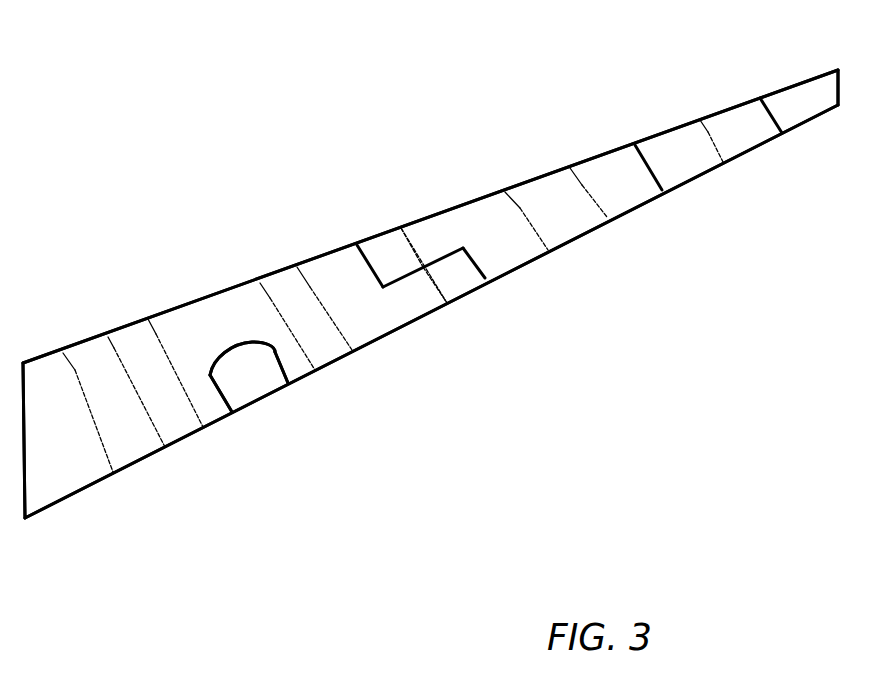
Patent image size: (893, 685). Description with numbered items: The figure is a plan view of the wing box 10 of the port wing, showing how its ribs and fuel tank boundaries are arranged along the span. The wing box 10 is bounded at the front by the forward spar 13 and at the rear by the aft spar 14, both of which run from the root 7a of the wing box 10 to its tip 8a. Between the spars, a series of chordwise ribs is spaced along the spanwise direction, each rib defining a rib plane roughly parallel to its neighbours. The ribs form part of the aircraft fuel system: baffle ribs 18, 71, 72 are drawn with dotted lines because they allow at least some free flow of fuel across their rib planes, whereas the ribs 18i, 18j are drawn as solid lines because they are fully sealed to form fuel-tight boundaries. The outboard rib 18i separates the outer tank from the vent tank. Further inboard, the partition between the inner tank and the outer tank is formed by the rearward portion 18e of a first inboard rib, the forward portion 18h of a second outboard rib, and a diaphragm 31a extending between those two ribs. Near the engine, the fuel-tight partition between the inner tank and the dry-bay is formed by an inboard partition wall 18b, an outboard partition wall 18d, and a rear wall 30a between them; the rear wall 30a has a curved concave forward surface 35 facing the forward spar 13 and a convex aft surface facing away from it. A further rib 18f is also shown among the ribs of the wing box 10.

The wing box 10 is at (248, 132).
The aft spar 14 is at (427, 217).
The forward spar 13 is at (598, 228).
The root 7a is at (23, 448).
The tip 8a is at (837, 90).
The baffle rib 18 is at (75, 370).
The partition wall 18b is at (223, 397).
The partition wall 18d is at (279, 370).
The rearward portion of first rib 18e is at (365, 258).
The web 18f is at (408, 323).
The forward portion of second rib 18h is at (478, 263).
The outboard rib 18i is at (643, 153).
The sealed rib 18j is at (768, 103).
The rear wall 30a is at (232, 340).
The diaphragm 31a is at (440, 258).
The curved concave forward surface 35 is at (246, 346).
The baffle rib 71 is at (437, 288).
The baffle rib 72 is at (405, 236).